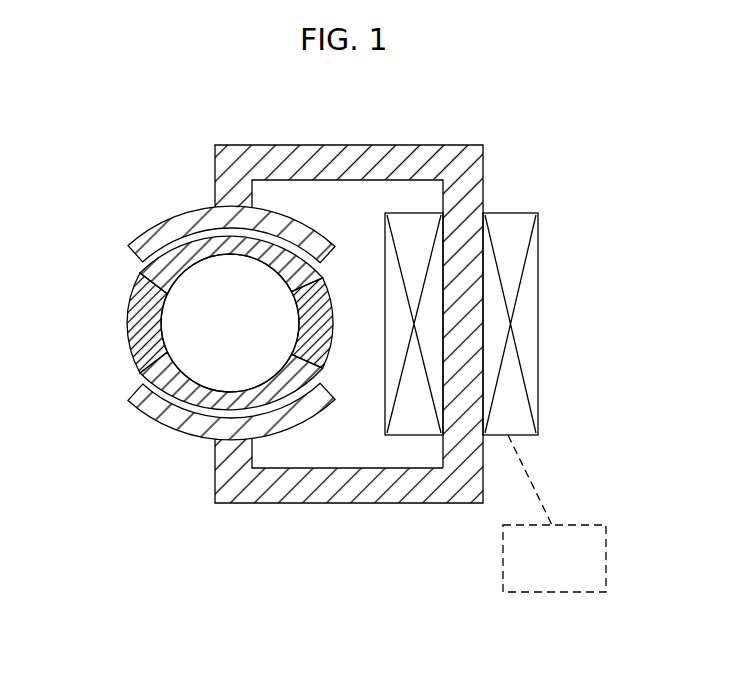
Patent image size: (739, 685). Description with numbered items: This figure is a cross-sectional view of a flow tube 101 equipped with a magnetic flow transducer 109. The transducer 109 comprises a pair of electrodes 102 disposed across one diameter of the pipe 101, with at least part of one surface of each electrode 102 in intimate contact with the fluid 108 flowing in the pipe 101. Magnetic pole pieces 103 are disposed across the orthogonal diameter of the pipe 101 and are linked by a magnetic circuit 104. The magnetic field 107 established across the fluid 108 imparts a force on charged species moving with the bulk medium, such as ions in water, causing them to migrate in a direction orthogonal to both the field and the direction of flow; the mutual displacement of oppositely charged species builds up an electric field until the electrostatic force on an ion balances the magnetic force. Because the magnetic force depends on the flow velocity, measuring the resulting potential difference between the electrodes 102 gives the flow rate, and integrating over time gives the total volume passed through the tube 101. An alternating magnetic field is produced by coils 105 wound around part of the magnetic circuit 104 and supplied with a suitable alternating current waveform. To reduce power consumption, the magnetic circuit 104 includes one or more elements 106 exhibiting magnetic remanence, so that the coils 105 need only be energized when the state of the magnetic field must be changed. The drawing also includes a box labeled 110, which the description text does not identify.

The flow tube 101 is at (147, 283).
The electrodes 102 is at (299, 322).
The magnetic pole pieces 103 is at (156, 223).
The magnetic circuit 104 is at (461, 143).
The coils 105 is at (541, 225).
The elements exhibiting magnetic remanence 106 is at (408, 503).
The magnetic field 107 is at (180, 368).
The fluid 108 is at (255, 296).
The magnetic transducer 109 is at (242, 136).
The controller 110 is at (575, 569).